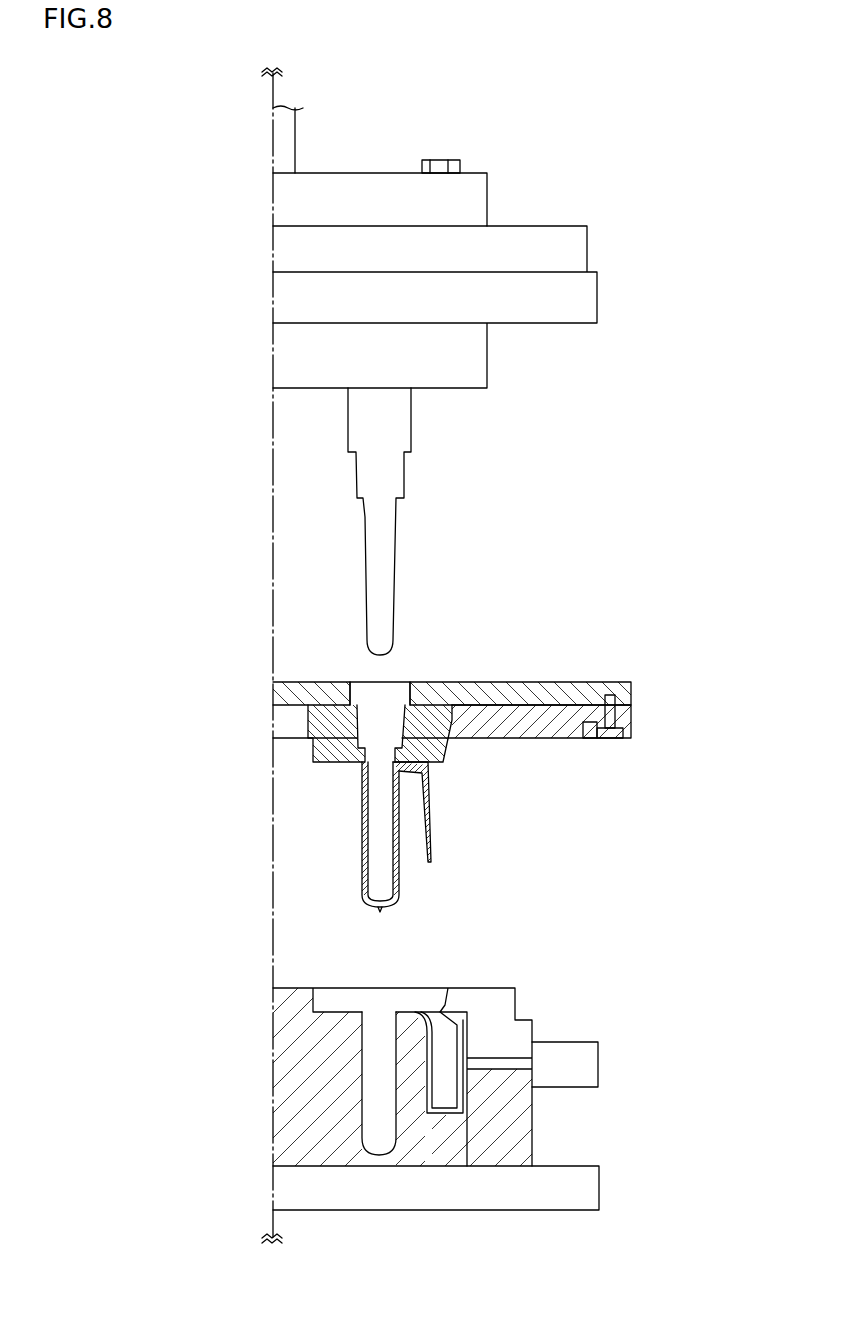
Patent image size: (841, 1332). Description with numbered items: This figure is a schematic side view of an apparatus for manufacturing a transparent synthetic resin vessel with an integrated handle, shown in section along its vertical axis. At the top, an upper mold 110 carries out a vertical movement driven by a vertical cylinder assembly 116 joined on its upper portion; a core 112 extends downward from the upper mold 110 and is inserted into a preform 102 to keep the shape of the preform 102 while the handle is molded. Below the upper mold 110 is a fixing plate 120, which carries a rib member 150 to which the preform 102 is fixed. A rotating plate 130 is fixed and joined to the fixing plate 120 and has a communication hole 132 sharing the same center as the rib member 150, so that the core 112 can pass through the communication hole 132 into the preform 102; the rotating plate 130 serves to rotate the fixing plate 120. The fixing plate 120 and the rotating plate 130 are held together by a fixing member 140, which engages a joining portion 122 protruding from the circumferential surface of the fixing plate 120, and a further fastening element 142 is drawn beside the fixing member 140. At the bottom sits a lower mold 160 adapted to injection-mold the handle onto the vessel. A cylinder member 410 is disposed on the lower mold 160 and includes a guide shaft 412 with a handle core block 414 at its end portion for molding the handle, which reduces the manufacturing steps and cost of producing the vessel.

The preform 102 is at (365, 831).
The upper mold 110 is at (480, 357).
The core 112 is at (390, 475).
The vertical cylinder assembly 116 is at (480, 199).
The fixing plate 120 is at (558, 738).
The joining portion 122 is at (584, 712).
The rotating plate 130 is at (630, 690).
The communication hole 132 is at (384, 688).
The fixing member 140 is at (630, 722).
The washer 142 is at (590, 742).
The rib member 150 is at (323, 727).
The lower mold 160 is at (597, 1188).
The cylinder member 410 is at (598, 1065).
The guide shaft 412 is at (497, 1065).
The handle core block 414 is at (467, 1040).